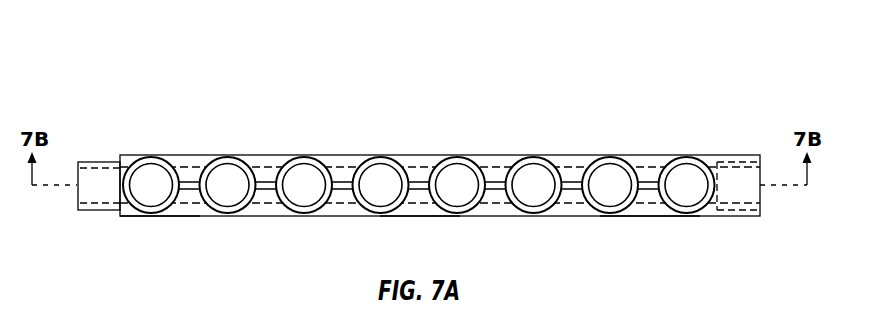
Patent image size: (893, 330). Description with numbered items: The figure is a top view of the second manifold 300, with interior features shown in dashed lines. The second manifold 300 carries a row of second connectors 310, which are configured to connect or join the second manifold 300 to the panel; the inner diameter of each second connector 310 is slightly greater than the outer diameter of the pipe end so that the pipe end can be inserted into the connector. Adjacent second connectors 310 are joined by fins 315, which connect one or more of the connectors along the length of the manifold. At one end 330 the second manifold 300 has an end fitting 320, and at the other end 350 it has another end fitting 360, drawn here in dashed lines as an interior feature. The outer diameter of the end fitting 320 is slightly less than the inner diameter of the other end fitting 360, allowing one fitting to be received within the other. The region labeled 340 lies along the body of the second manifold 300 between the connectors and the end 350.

The second manifold 300 is at (133, 64).
The second connectors 310 is at (307, 156).
The fins 315 is at (421, 177).
The end fitting 320 is at (97, 160).
The end 330 is at (148, 217).
The second layer 340 is at (417, 217).
The other end 350 is at (647, 217).
The end fitting 360 is at (737, 217).